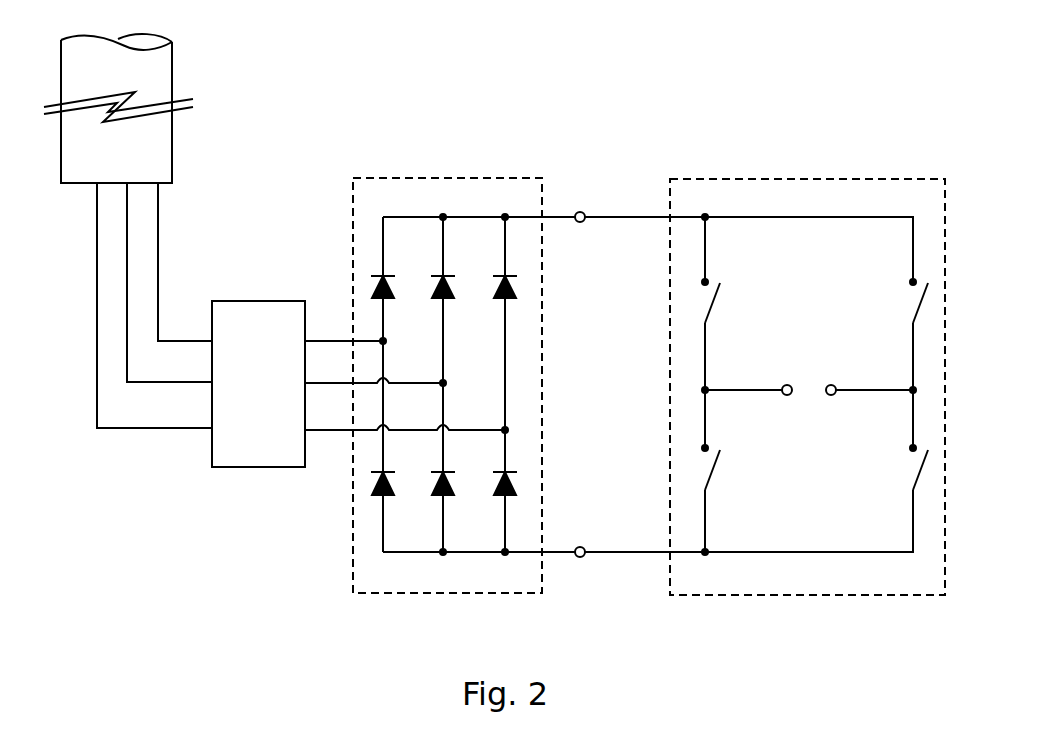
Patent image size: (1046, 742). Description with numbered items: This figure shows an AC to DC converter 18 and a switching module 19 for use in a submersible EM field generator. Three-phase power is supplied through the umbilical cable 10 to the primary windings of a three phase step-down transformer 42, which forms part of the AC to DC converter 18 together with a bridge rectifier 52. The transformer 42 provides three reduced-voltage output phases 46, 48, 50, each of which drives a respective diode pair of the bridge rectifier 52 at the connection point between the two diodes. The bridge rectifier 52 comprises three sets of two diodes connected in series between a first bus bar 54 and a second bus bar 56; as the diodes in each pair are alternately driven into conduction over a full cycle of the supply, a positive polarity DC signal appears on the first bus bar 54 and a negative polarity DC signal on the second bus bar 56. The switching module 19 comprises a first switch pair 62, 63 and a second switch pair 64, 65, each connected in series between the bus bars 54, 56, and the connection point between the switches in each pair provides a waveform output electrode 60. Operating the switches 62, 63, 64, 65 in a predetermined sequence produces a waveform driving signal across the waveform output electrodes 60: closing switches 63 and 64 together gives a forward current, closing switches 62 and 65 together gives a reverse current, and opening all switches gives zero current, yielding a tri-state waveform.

The umbilical cable 10 is at (96, 163).
The three phase step-down transformer 42 is at (272, 396).
The first output phase 46 is at (346, 341).
The second output phase 48 is at (346, 383).
The third output phase 50 is at (346, 430).
The AC to DC converter 18 is at (552, 128).
The bridge rectifier 52 is at (452, 178).
The first bus bar 54 is at (585, 212).
The second bus bar 56 is at (585, 557).
The switching module 19 is at (765, 360).
The waveform output electrodes 60 is at (811, 385).
The first switch of the first switch pair 62 is at (696, 297).
The second switch of the first switch pair 63 is at (696, 467).
The first switch of the second switch pair 64 is at (904, 297).
The second switch of the second switch pair 65 is at (904, 467).